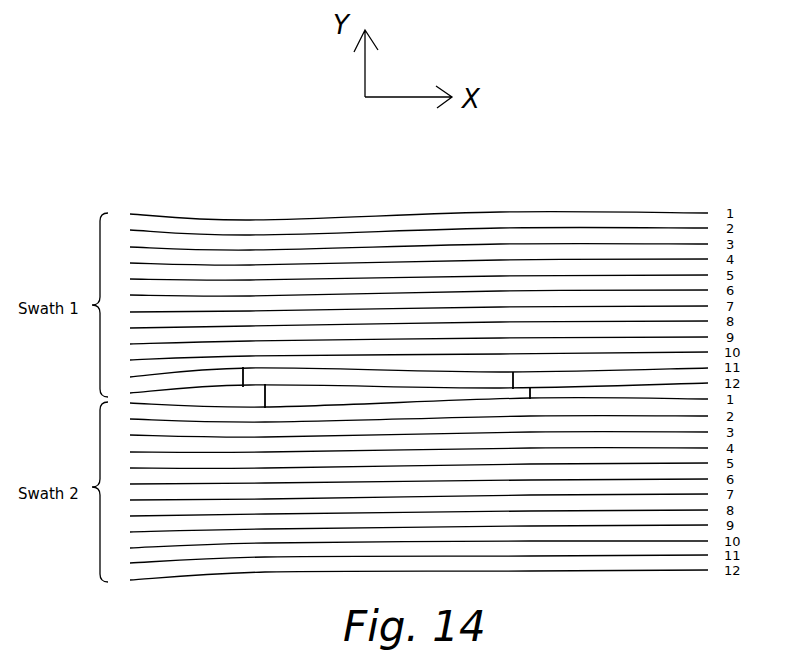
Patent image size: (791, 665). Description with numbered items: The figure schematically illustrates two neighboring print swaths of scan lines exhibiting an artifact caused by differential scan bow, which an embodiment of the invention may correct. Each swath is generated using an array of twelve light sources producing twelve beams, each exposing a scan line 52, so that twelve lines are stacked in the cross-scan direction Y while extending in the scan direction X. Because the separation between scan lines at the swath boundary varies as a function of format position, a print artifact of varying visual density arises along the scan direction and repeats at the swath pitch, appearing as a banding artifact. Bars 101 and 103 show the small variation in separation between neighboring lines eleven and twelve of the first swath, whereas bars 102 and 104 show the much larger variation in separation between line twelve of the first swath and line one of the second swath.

The scan line 52 is at (628, 243).
The bar 101 is at (243, 370).
The bar 102 is at (265, 385).
The bar 103 is at (513, 373).
The bar 104 is at (530, 388).